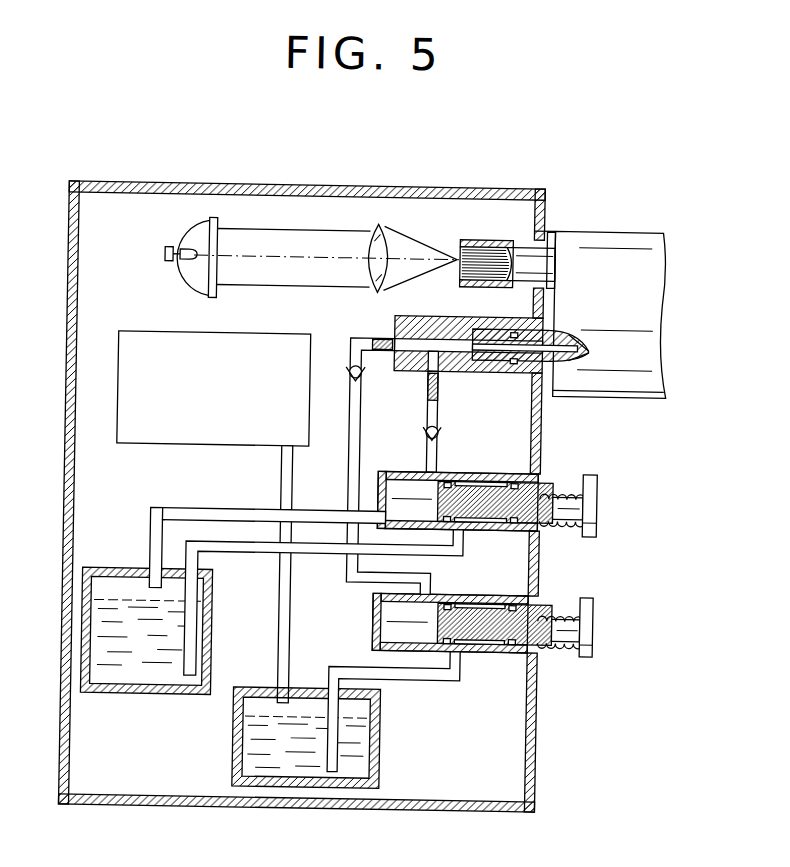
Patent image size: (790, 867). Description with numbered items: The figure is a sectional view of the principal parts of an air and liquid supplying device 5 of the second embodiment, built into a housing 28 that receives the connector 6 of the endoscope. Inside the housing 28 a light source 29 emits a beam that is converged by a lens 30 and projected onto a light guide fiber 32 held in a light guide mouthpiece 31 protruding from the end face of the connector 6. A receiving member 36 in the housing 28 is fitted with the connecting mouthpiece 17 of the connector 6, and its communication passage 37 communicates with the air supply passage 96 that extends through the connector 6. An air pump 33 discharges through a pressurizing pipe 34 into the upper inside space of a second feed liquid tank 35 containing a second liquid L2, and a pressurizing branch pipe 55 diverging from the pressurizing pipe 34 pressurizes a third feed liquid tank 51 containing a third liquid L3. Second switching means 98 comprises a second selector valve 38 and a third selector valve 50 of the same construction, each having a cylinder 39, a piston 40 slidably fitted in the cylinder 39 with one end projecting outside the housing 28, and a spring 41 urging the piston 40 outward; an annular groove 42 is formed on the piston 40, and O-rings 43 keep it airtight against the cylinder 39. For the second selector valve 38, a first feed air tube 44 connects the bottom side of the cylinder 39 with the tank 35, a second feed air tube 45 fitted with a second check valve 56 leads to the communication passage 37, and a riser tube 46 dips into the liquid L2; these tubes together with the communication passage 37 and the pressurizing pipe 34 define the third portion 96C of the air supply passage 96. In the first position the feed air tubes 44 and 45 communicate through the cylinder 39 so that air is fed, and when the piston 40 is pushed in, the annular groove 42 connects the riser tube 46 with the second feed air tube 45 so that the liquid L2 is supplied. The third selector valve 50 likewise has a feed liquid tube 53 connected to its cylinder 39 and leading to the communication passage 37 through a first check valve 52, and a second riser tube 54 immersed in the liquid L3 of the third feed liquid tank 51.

The apparatus 5 is at (302, 456).
The housing 28 is at (332, 184).
The light source 29 is at (185, 238).
The lens 30 is at (385, 231).
The light guide fiber 32 is at (487, 239).
The light guide mouthpiece 31 is at (548, 250).
The connector 6 is at (662, 266).
The communication passage 37 is at (416, 340).
The receiving member 36 is at (438, 328).
The connecting mouthpiece 17 is at (553, 325).
The air supply passage 96 is at (583, 348).
The air pump 33 is at (130, 334).
The first check valve 52 is at (360, 372).
The second check valve 56 is at (438, 432).
The O-rings 43 is at (514, 478).
The cylinder 39 is at (383, 470).
The second feed air tube 45 is at (436, 452).
The spring 41 is at (568, 486).
The piston 40 is at (597, 505).
The second selector valve 38 is at (598, 527).
The third portion of the air supply passage 96C is at (246, 523).
The pressurizing pipe 34 is at (281, 470).
The first feed air tube 44 is at (316, 510).
The annular groove 42 is at (466, 522).
The second liquid L2 is at (84, 622).
The riser tube 46 is at (250, 554).
The feed liquid tube 53 is at (364, 468).
The second feed liquid tank 35 is at (113, 611).
The pressurizing branch pipe 55 is at (281, 628).
The second switching means 98 is at (540, 640).
The third selector valve 50 is at (604, 647).
The second riser tube 54 is at (415, 680).
The third liquid L3 is at (240, 740).
The third feed liquid tank 51 is at (277, 737).